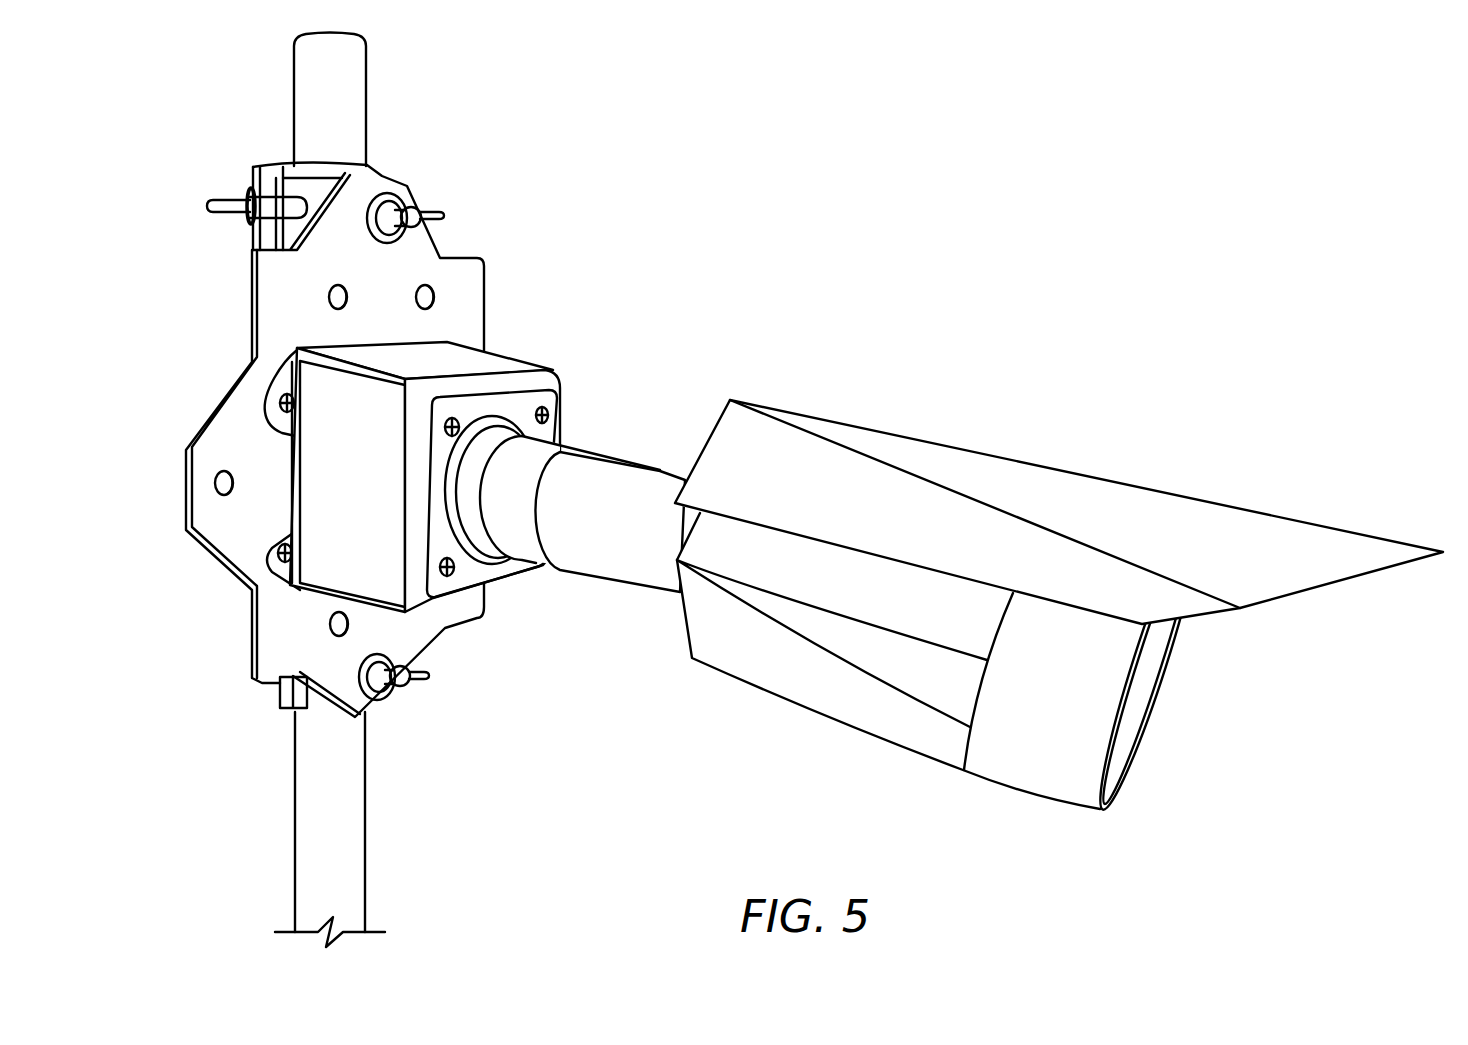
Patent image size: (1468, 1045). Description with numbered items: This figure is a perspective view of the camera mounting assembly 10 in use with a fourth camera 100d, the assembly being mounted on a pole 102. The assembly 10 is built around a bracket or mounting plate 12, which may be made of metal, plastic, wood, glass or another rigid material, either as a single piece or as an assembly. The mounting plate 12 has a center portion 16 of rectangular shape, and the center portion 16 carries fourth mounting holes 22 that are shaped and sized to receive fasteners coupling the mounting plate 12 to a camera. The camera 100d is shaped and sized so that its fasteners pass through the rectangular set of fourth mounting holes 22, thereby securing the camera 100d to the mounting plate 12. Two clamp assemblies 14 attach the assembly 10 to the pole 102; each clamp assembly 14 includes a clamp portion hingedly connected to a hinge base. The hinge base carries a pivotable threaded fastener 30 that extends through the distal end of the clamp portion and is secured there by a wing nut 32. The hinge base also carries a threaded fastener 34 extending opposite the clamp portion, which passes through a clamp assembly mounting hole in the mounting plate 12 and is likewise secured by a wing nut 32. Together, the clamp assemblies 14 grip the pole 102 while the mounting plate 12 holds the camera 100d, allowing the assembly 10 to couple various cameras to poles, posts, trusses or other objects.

The camera mounting assembly 10 is at (328, 419).
The mounting plate 12 is at (458, 293).
The clamp assembly 14 is at (220, 240).
The center portion 16 is at (272, 297).
The fourth mounting hole 22 is at (282, 555).
The pivotable threaded fastener 30 is at (267, 203).
The wing nut 32 is at (387, 195).
The threaded fastener 34 is at (412, 208).
The fourth camera 100d is at (1140, 500).
The pole 102 is at (308, 862).